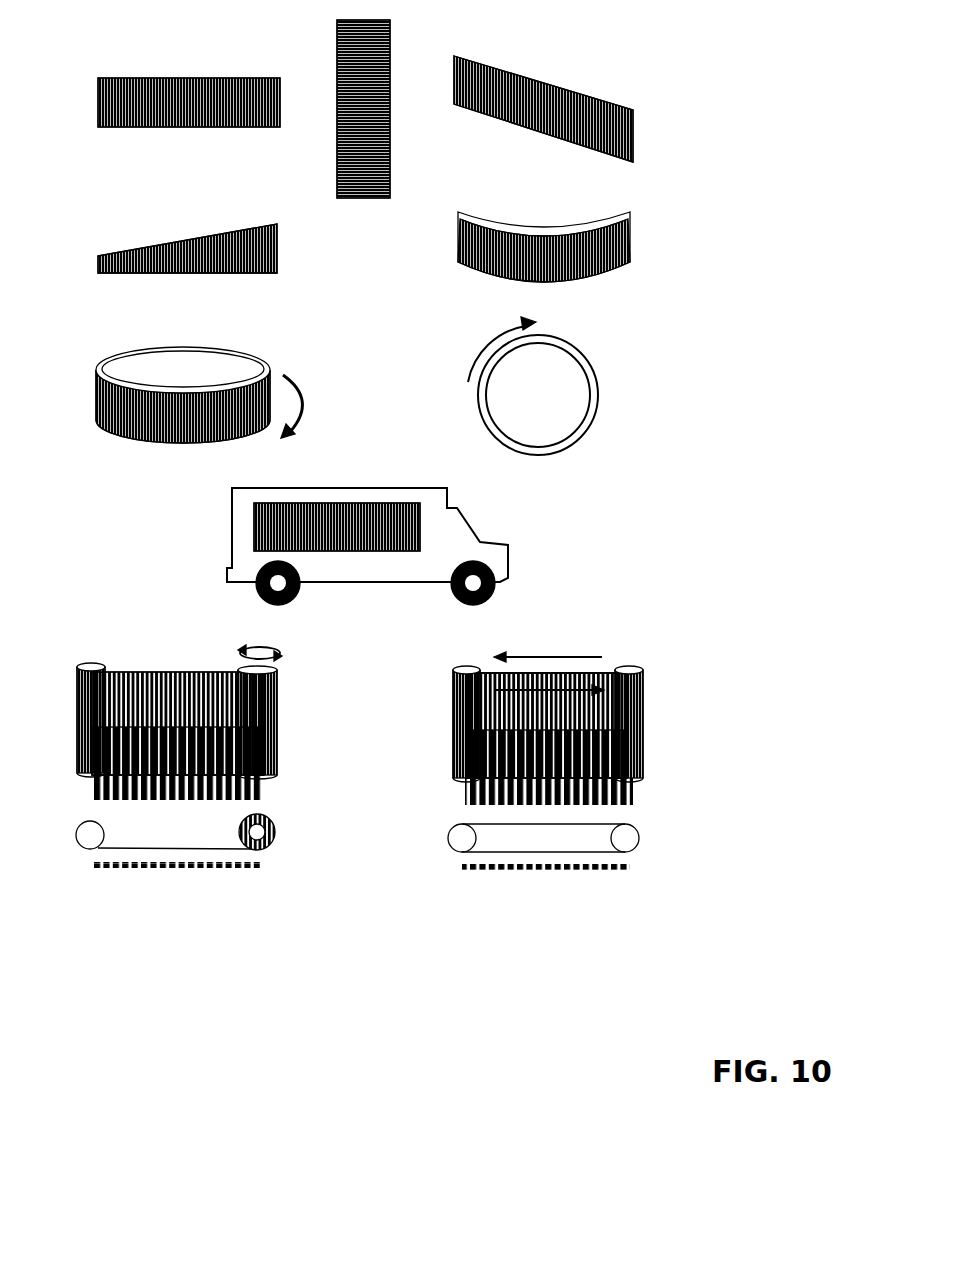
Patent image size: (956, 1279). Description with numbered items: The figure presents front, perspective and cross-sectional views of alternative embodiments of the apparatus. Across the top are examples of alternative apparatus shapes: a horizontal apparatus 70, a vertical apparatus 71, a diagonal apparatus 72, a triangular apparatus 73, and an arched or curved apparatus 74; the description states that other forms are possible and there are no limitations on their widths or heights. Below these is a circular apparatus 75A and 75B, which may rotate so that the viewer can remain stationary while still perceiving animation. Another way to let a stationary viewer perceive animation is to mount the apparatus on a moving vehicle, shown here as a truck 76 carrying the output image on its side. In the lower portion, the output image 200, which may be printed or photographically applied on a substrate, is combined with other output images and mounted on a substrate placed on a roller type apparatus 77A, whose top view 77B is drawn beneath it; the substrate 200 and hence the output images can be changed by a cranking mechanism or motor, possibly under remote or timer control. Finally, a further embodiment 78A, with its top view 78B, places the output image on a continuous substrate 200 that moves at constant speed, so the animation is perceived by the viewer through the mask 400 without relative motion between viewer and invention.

The horizontal apparatus 70 is at (143, 132).
The vertical apparatus 71 is at (337, 178).
The diagonal apparatus 72 is at (555, 137).
The triangular apparatus 73 is at (192, 278).
The arched or curved apparatus 74 is at (497, 280).
The circular apparatus 75A is at (136, 445).
The circular apparatus 75B is at (496, 438).
The truck 76 is at (254, 535).
The roller type apparatus 77A is at (282, 712).
The roller type apparatus top view 77B is at (282, 834).
The continuous substrate apparatus 78A is at (648, 712).
The continuous substrate apparatus top view 78B is at (644, 834).
The output image / substrate 200 is at (80, 697).
The mask 400 is at (88, 791).